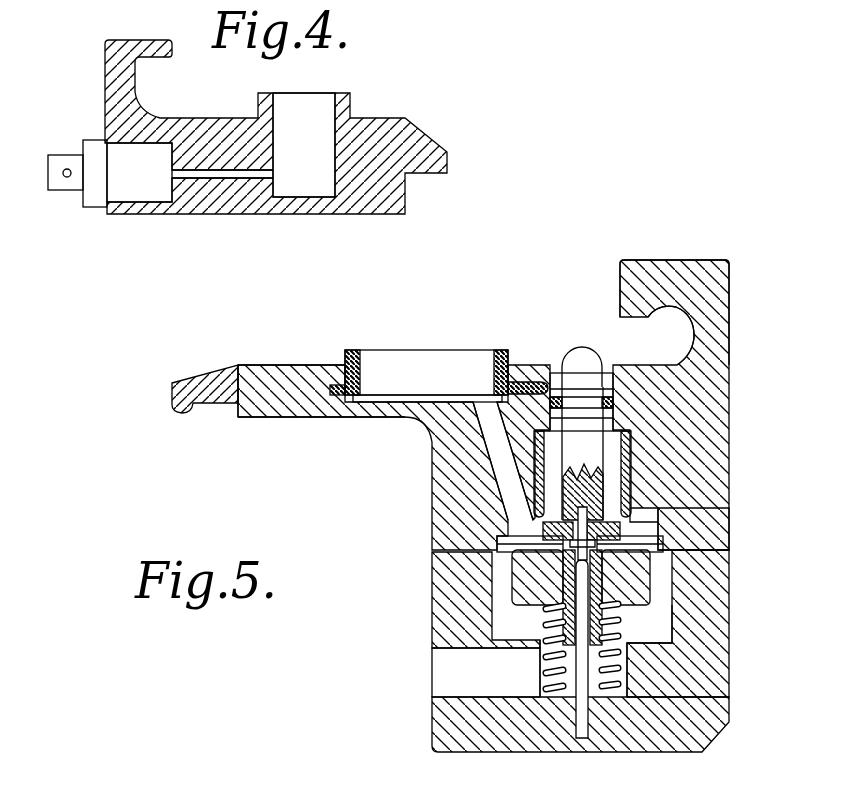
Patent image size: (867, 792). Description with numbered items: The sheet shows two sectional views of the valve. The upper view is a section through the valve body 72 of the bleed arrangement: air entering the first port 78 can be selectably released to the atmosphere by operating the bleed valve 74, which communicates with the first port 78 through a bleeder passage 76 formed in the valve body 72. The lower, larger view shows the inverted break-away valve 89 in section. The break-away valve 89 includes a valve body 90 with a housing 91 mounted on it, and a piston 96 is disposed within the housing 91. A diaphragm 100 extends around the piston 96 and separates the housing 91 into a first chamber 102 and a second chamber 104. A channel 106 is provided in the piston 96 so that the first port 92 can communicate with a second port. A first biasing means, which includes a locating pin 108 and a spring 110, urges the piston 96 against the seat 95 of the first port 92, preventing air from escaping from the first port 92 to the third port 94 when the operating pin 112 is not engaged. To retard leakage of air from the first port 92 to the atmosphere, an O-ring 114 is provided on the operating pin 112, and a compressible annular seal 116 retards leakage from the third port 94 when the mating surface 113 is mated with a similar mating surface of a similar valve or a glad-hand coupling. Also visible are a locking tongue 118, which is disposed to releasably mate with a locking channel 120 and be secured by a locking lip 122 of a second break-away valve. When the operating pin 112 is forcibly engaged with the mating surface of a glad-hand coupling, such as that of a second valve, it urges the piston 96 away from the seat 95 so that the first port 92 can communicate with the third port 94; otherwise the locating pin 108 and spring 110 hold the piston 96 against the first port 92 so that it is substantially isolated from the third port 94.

In FIG. 4, the valve body 72 is at (355, 214).
In FIG. 4, the bleed valve 74 is at (90, 206).
In FIG. 4, the bleeder passage 76 is at (230, 178).
In FIG. 4, the first port 78 is at (307, 120).
In FIG. 5, the break-away valve 89 is at (296, 514).
In FIG. 5, the valve body 90 is at (732, 446).
In FIG. 5, the housing 91 is at (732, 667).
In FIG. 5, the first port 92 is at (457, 682).
In FIG. 5, the third port 94 is at (492, 427).
In FIG. 5, the seat 95 is at (630, 501).
In FIG. 5, the piston 96 is at (530, 587).
In FIG. 5, the diaphragm 100 is at (652, 595).
In FIG. 5, the first chamber 102 is at (652, 622).
In FIG. 5, the second chamber 104 is at (662, 563).
In FIG. 5, the channel 106 is at (560, 568).
In FIG. 5, the locating pin 108 is at (592, 722).
In FIG. 5, the spring 110 is at (543, 621).
In FIG. 5, the operating pin 112 is at (577, 345).
In FIG. 5, the mating surface 113 is at (267, 363).
In FIG. 5, the O-ring 114 is at (618, 403).
In FIG. 5, the compressible annular seal 116 is at (358, 350).
In FIG. 5, the locking tongue 118 is at (190, 380).
In FIG. 5, the locking channel 120 is at (672, 334).
In FIG. 5, the locking lip 122 is at (652, 262).